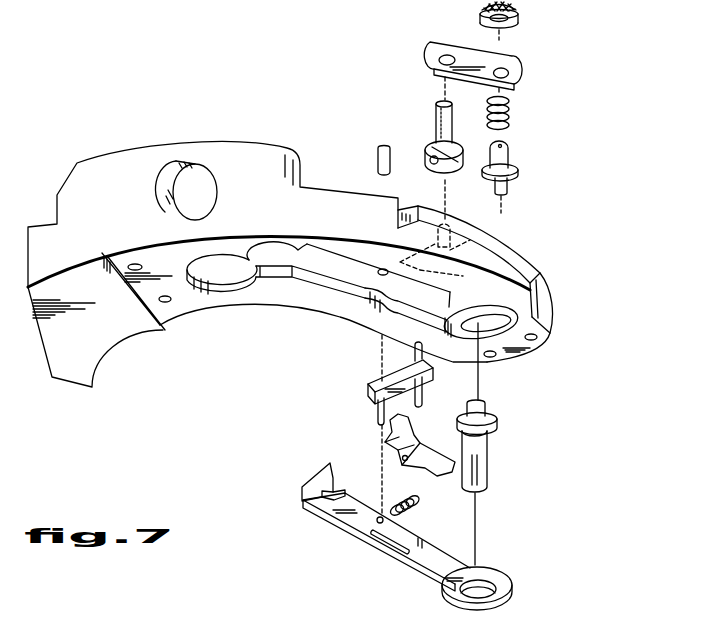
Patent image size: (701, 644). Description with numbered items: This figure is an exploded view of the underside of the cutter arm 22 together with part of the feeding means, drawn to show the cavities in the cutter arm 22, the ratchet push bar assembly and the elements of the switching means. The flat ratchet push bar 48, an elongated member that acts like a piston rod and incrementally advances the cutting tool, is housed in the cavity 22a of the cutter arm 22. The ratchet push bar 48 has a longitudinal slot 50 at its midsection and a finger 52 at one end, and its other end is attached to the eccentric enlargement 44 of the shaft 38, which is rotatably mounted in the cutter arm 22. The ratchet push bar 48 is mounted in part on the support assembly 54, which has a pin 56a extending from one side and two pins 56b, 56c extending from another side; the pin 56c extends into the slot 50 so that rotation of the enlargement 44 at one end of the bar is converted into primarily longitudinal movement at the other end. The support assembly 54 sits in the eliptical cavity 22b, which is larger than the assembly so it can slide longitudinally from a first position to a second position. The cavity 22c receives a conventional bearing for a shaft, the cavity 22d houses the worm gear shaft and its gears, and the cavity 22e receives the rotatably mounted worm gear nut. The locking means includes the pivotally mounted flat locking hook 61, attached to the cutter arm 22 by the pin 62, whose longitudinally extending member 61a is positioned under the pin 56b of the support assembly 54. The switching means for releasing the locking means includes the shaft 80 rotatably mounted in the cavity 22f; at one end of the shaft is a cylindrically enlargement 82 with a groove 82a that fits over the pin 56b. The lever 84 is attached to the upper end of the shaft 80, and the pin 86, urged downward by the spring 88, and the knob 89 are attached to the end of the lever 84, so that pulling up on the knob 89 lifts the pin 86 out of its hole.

The cutter arm 22 is at (510, 243).
The cavity 22a is at (461, 311).
The eliptical cavity 22b is at (370, 311).
The cavity 22c is at (280, 257).
The cavity 22d is at (218, 272).
The cavity 22e is at (176, 170).
The cavity 22f is at (476, 222).
The shaft 38 is at (492, 455).
The eccentric enlargement 44 is at (500, 425).
The ratchet push bar 48 is at (430, 566).
The longitudinal slot 50 is at (375, 543).
The finger 52 is at (326, 478).
The support assembly 54 is at (390, 380).
The pin 56a is at (412, 352).
The pin 56b is at (422, 391).
The pin 56c is at (378, 414).
The locking hook 61 is at (415, 460).
The longitudinally extending member 61a is at (436, 475).
The pin 62 is at (380, 146).
The shaft 80 is at (437, 115).
The cylindrically enlargement 82 is at (427, 152).
The groove 82a is at (437, 165).
The lever 84 is at (438, 45).
The pin 86 is at (510, 153).
The spring 88 is at (510, 108).
The knob 89 is at (520, 10).